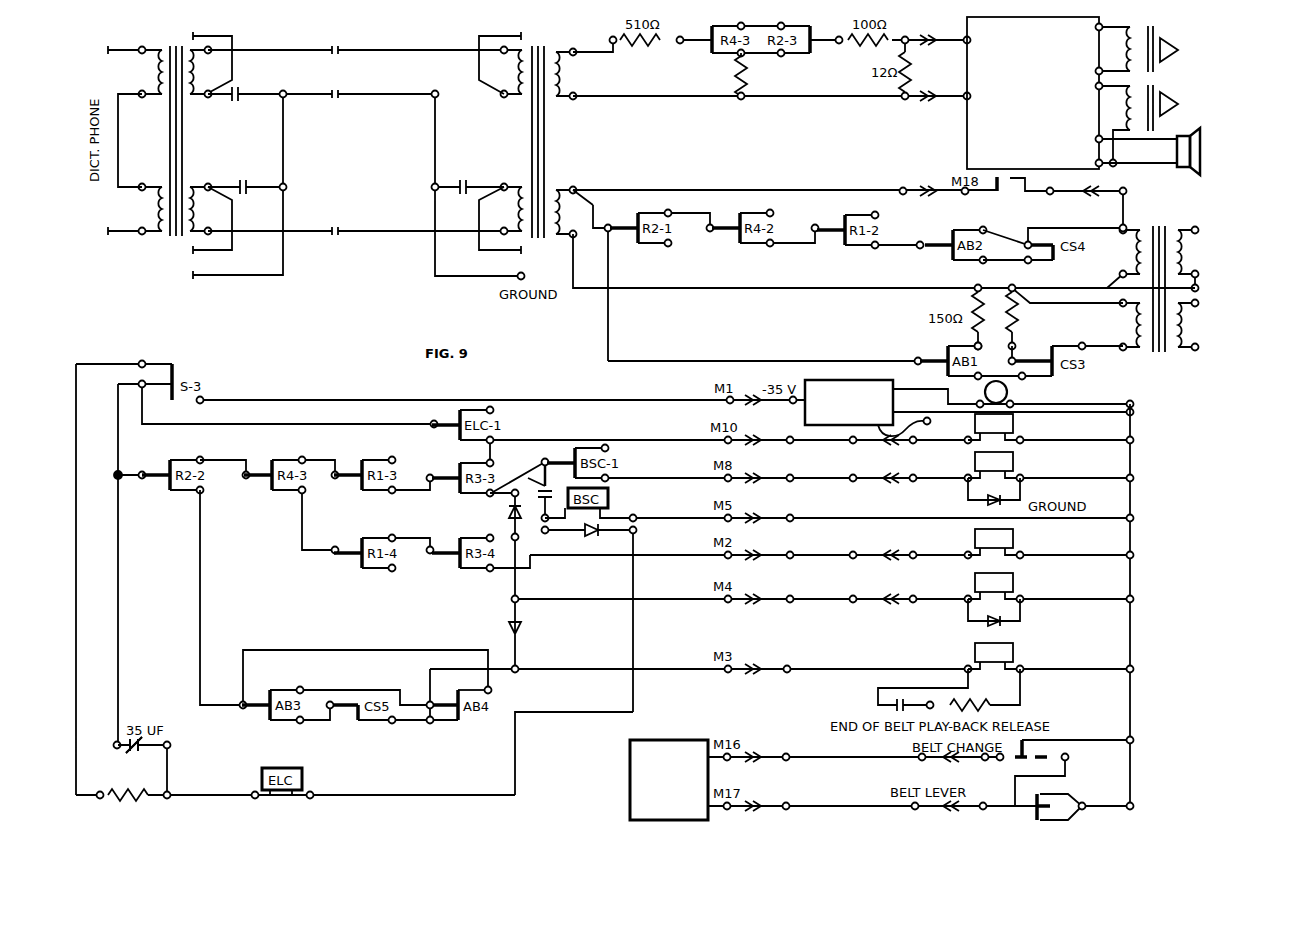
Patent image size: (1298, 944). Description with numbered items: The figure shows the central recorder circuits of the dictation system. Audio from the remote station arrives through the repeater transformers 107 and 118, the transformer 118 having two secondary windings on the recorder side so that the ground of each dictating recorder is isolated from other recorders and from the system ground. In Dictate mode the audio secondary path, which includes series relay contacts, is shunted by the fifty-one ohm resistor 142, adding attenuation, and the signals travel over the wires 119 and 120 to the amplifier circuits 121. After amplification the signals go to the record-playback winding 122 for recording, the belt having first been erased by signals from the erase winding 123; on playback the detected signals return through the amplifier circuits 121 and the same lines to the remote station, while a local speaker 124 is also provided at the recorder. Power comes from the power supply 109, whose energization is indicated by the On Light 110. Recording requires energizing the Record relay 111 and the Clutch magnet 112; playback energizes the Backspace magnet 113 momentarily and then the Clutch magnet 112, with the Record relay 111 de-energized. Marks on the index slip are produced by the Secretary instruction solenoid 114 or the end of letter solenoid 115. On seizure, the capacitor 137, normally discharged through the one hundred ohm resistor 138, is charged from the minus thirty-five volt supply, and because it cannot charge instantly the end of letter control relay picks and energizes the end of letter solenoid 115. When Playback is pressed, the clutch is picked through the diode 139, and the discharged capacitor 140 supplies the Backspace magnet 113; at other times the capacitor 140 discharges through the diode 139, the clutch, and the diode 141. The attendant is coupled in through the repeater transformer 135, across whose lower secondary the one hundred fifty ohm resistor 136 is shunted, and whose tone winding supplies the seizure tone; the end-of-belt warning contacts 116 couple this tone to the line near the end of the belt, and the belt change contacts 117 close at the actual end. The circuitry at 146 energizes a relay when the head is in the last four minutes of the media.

The repeater transformer 107 is at (216, 145).
The repeater transformer 118 is at (578, 145).
The 51 ohm resistor 142 is at (740, 63).
The wire 119 is at (962, 47).
The wire 120 is at (962, 103).
The amplifier circuits 121 is at (967, 146).
The erase winding 123 is at (1177, 57).
The record-playback winding 122 is at (1177, 111).
The local speaker 124 is at (1200, 172).
The end-of-belt warning contacts 116 is at (1008, 183).
The repeater transformer 135 is at (1172, 219).
The 150 ohm resistor 136 is at (1014, 327).
The On Light 110 is at (1012, 386).
The power supply 109 is at (832, 380).
The end of letter solenoid 115 is at (975, 424).
The Backspace magnet 113 is at (975, 462).
The Secretary instruction solenoid 114 is at (975, 539).
The Clutch magnet 112 is at (975, 583).
The Record relay 111 is at (975, 653).
The capacitor 140 is at (522, 484).
The diode 139 is at (508, 514).
The diode 141 is at (591, 537).
The circuitry block 146 is at (630, 758).
The belt change contacts 117 is at (1030, 750).
The capacitor 137 is at (135, 748).
The 100 ohm resistor 138 is at (127, 794).